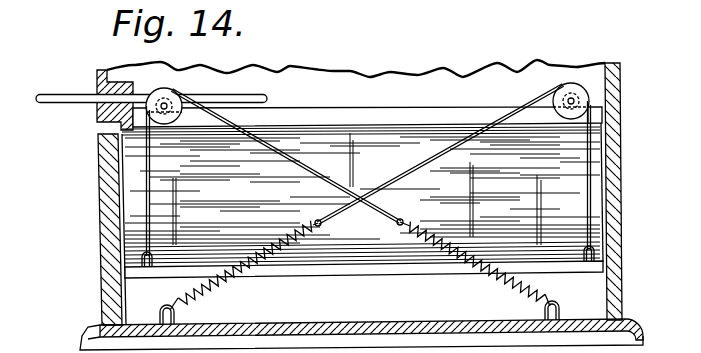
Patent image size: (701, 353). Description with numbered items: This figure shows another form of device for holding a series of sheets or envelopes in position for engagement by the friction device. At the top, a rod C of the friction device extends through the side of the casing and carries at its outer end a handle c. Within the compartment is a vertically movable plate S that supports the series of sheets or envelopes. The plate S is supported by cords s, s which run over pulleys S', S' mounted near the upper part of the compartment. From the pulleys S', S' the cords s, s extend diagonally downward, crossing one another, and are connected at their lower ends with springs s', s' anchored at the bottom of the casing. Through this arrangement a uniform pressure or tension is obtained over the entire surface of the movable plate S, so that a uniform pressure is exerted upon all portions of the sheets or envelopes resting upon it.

The handle c is at (38, 103).
The rod C is at (200, 89).
The pulley S' is at (367, 98).
The cord s is at (362, 175).
The vertically movable plate S is at (364, 284).
The spring s' is at (359, 272).